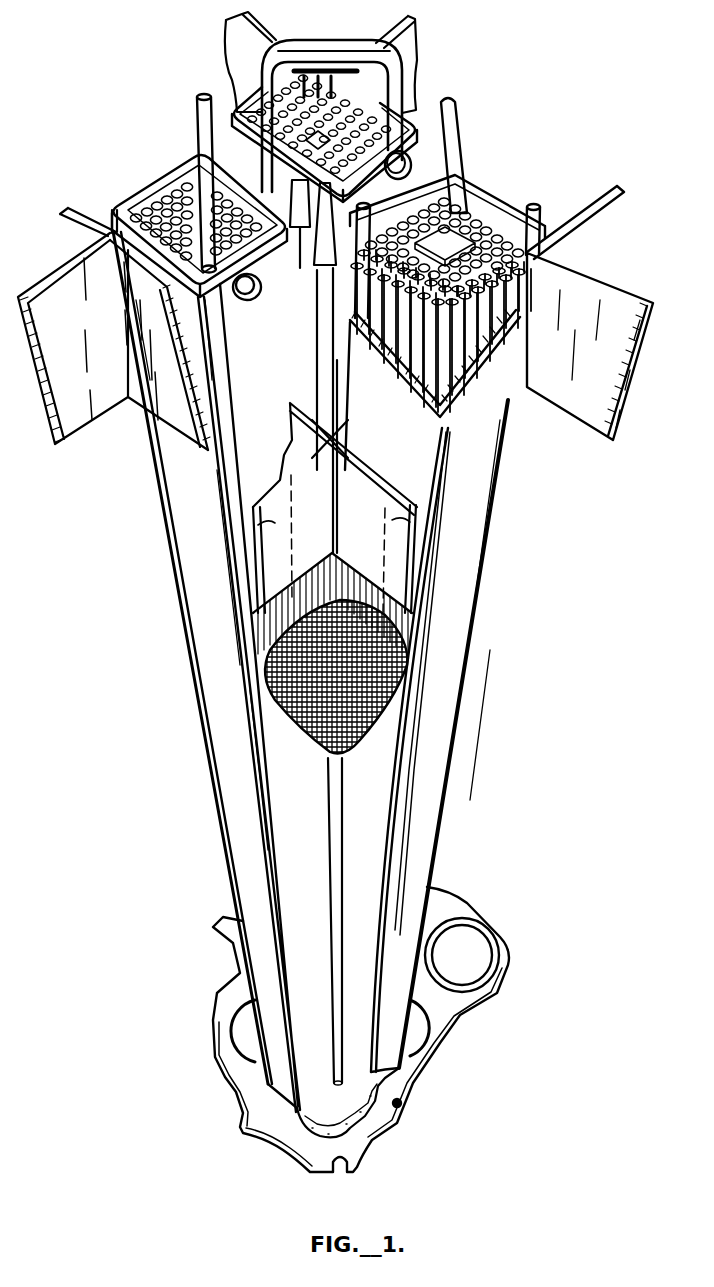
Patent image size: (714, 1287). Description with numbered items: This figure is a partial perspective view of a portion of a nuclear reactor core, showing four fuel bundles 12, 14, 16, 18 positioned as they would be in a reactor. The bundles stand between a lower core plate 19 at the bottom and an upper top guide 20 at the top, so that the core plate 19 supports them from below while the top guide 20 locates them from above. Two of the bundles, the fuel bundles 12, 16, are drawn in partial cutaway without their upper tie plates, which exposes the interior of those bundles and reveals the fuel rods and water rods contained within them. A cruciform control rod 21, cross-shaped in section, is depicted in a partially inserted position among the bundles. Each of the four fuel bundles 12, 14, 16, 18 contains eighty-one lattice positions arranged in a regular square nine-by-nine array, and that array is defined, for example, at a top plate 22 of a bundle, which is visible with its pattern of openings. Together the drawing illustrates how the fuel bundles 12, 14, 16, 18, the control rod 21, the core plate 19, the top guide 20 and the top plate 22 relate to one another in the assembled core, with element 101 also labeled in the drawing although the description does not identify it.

The fuel bundle 12 is at (460, 527).
The fuel bundle 14 is at (197, 560).
The fuel bundle 16 is at (306, 846).
The fuel bundle 18 is at (384, 222).
The lower core plate 19 is at (440, 1004).
The upper top guide 20 is at (580, 314).
The cruciform control rod 21 is at (299, 612).
The top plate 22 is at (291, 100).
The flow hole 101 is at (398, 192).